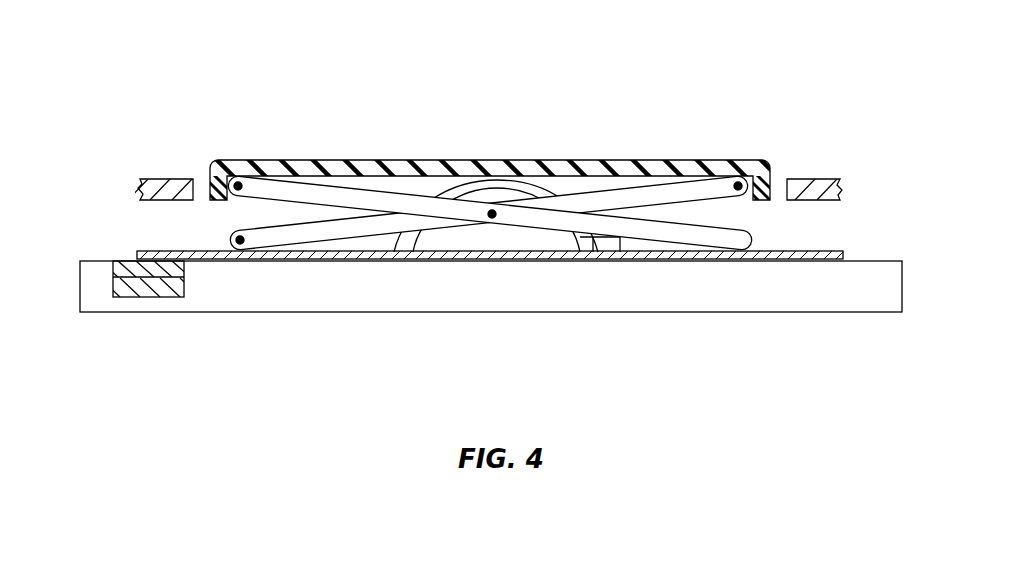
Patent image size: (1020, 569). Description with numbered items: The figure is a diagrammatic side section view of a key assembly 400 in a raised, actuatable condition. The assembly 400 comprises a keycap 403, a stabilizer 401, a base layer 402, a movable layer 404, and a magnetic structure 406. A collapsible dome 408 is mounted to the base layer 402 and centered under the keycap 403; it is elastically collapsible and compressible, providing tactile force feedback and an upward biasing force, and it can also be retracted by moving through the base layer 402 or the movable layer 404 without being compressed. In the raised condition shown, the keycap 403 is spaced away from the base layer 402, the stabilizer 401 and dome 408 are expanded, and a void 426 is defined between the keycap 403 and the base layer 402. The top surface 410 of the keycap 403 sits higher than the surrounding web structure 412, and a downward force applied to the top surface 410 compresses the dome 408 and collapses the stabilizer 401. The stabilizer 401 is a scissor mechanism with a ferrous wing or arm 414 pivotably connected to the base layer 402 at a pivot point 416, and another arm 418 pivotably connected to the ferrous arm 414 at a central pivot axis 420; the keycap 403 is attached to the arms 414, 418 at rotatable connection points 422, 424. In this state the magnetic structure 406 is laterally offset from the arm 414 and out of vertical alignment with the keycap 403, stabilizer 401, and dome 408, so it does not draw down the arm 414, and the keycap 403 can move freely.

The key assembly 400 is at (758, 87).
The stabilizer 401 is at (686, 232).
The base layer 402 is at (147, 251).
The keycap 403 is at (661, 166).
The movable layer 404 is at (80, 261).
The magnetic structure 406 is at (148, 288).
The collapsible dome 408 is at (522, 179).
The top surface 410 is at (567, 160).
The web structure 412 is at (162, 179).
The ferrous arm 414 is at (301, 230).
The pivot point 416 is at (246, 244).
The other arm 418 is at (345, 190).
The central pivot axis 420 is at (497, 220).
The rotatable connection point 422 is at (238, 182).
The rotatable connection point 424 is at (738, 181).
The void 426 is at (726, 213).